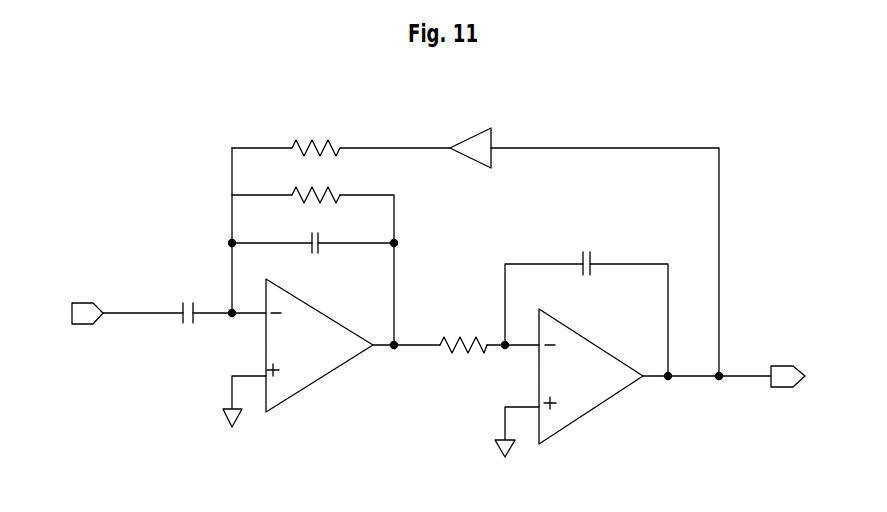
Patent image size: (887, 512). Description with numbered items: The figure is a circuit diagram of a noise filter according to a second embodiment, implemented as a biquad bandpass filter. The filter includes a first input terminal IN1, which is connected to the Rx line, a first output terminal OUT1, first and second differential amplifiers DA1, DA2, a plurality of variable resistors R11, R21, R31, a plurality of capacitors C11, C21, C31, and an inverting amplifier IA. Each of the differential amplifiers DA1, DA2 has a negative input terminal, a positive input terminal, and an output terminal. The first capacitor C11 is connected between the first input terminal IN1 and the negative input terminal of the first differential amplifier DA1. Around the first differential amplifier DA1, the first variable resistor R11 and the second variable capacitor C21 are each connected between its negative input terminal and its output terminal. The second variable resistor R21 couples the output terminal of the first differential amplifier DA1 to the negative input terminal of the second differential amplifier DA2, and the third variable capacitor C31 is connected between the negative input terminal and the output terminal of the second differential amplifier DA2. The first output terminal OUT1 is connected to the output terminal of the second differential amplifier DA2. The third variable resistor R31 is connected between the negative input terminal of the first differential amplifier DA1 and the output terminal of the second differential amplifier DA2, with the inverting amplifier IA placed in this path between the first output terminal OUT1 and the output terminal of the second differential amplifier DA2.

The first input terminal IN1 is at (70, 314).
The first output terminal OUT1 is at (810, 376).
The first capacitor C11 is at (187, 300).
The third variable resistor R31 is at (316, 134).
The first variable resistor R11 is at (316, 183).
The second variable capacitor C21 is at (315, 230).
The second variable resistor R21 is at (463, 332).
The third variable capacitor C31 is at (587, 250).
The inverting amplifier IA is at (468, 134).
The first differential amplifier DA1 is at (320, 382).
The second differential amplifier DA2 is at (592, 412).